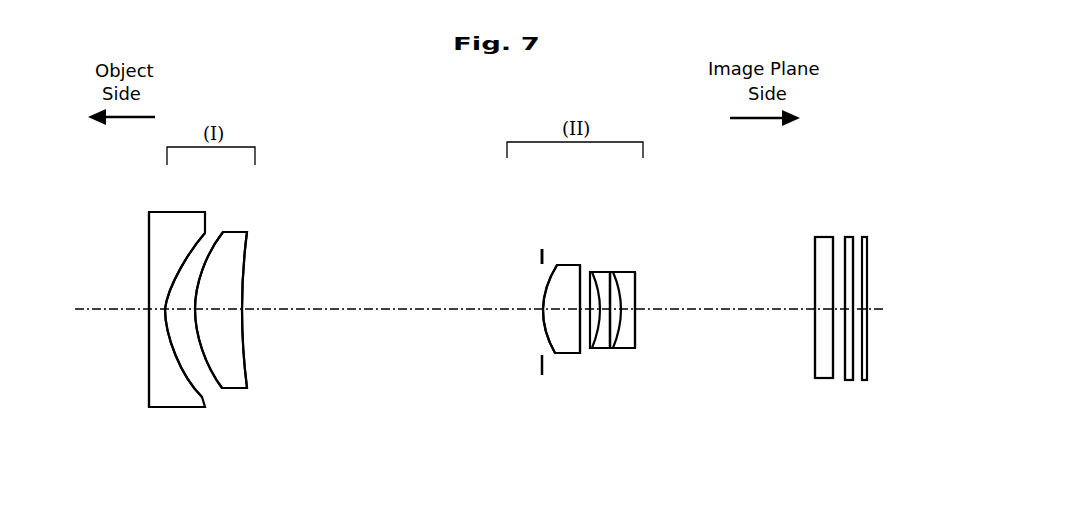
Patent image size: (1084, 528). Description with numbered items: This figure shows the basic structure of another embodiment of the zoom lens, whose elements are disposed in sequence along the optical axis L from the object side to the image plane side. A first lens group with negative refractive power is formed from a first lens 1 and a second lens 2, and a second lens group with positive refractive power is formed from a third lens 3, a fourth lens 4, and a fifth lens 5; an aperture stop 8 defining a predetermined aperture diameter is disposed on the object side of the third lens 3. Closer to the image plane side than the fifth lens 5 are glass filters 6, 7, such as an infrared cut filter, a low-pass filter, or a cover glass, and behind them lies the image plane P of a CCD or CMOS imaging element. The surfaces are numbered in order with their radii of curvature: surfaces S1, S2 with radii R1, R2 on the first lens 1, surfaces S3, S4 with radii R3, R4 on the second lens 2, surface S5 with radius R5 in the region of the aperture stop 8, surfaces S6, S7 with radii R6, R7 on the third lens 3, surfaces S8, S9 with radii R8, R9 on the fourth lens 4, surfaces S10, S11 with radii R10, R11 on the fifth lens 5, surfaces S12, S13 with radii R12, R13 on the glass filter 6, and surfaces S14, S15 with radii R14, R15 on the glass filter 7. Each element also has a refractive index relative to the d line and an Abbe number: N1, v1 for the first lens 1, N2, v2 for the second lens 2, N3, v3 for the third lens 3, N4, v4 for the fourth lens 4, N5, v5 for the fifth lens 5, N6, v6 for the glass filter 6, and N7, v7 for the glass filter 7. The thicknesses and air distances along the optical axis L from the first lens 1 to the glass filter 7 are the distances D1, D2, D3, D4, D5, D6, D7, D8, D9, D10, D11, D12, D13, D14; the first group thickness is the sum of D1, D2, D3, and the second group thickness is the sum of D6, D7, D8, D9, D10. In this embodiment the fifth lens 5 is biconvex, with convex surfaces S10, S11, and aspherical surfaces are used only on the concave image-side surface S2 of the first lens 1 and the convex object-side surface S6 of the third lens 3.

The first lens 1 is at (170, 316).
The second lens 2 is at (277, 299).
The third lens 3 is at (549, 308).
The fourth lens 4 is at (650, 321).
The fifth lens 5 is at (681, 310).
The glass filter 6 is at (810, 316).
The glass filter 7 is at (882, 314).
The aperture stop 8 is at (538, 232).
The image plane P is at (901, 278).
The optical axis L is at (85, 311).
The distance along the optical axis D1 is at (165, 312).
The distance along the optical axis D2 is at (178, 306).
The distance along the optical axis D3 is at (232, 308).
The distance along the optical axis D4 is at (362, 307).
The distance along the optical axis D5 is at (539, 307).
The distance along the optical axis D6 is at (550, 325).
The distance along the optical axis D7 is at (582, 307).
The distance along the optical axis D8 is at (632, 348).
The distance along the optical axis D9 is at (613, 323).
The distance along the optical axis D10 is at (627, 300).
The distance along the optical axis D11 is at (708, 312).
The distance along the optical axis D12 is at (823, 320).
The distance along the optical axis D13 is at (833, 312).
The distance along the optical axis D14 is at (857, 295).
The surface S1 is at (108, 316).
The radius of curvature R1 is at (150, 374).
The surface S2 is at (219, 338).
The radius of curvature R2 is at (181, 358).
The surface S3 is at (248, 310).
The radius of curvature R3 is at (204, 341).
The surface S4 is at (288, 310).
The radius of curvature R4 is at (240, 333).
The surface S5 is at (502, 236).
The radius of curvature R5 is at (541, 258).
The surface S6 is at (568, 348).
The radius of curvature R6 is at (555, 355).
The surface S7 is at (596, 363).
The radius of curvature R7 is at (581, 354).
The surface S8 is at (630, 379).
The radius of curvature R8 is at (590, 349).
The surface S9 is at (660, 284).
The radius of curvature R9 is at (612, 272).
The surface S10 is at (676, 296).
The radius of curvature R10 is at (611, 290).
The surface S11 is at (694, 331).
The radius of curvature R11 is at (636, 345).
The surface S12 is at (810, 333).
The radius of curvature R12 is at (818, 378).
The surface S13 is at (847, 344).
The radius of curvature R13 is at (838, 384).
The surface S14 is at (883, 281).
The radius of curvature R14 is at (846, 268).
The surface S15 is at (892, 303).
The radius of curvature R15 is at (855, 284).
The refractive index N1 is at (171, 345).
The Abbe number v1 is at (167, 402).
The refractive index N2 is at (279, 338).
The Abbe number v2 is at (233, 389).
The refractive index N3 is at (527, 346).
The Abbe number v3 is at (548, 356).
The refractive index N4 is at (622, 354).
The Abbe number v4 is at (603, 349).
The refractive index N5 is at (648, 368).
The Abbe number v5 is at (617, 350).
The refractive index N6 is at (784, 346).
The Abbe number v6 is at (822, 358).
The refractive index N7 is at (888, 344).
The Abbe number v7 is at (848, 383).